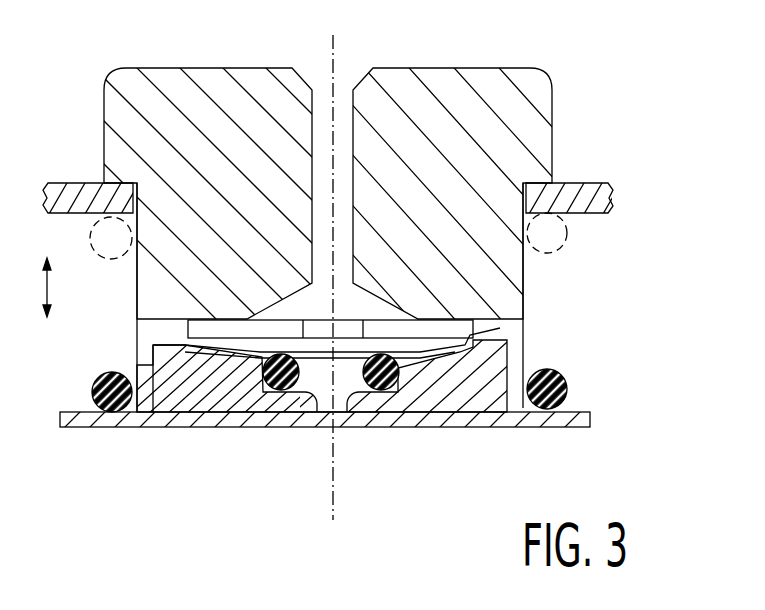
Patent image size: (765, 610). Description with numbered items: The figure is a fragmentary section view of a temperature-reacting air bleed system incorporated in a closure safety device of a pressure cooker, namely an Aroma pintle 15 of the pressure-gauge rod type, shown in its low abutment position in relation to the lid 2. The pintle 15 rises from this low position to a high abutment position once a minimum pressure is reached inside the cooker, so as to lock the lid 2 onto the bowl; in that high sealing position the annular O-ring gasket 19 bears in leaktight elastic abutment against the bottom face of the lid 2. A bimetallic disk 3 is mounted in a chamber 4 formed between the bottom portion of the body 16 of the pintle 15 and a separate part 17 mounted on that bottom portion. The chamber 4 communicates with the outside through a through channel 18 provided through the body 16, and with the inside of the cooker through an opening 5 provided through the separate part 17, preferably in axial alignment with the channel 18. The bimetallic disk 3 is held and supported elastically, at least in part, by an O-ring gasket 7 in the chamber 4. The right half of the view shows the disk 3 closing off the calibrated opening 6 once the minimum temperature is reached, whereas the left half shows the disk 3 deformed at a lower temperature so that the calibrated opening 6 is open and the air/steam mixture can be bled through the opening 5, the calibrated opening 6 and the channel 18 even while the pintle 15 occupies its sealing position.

The lid 2 is at (595, 182).
The bimetallic disk 3 is at (213, 352).
The chamber 4 is at (240, 362).
The opening 5 is at (322, 410).
The calibrated opening 6 is at (187, 323).
The O-ring gasket 7 is at (383, 394).
The Aroma pintle 15 is at (382, 162).
The body 16 is at (493, 270).
The separate part 17 is at (443, 405).
The through channel 18 is at (352, 82).
The annular O-ring gasket 19 is at (568, 247).